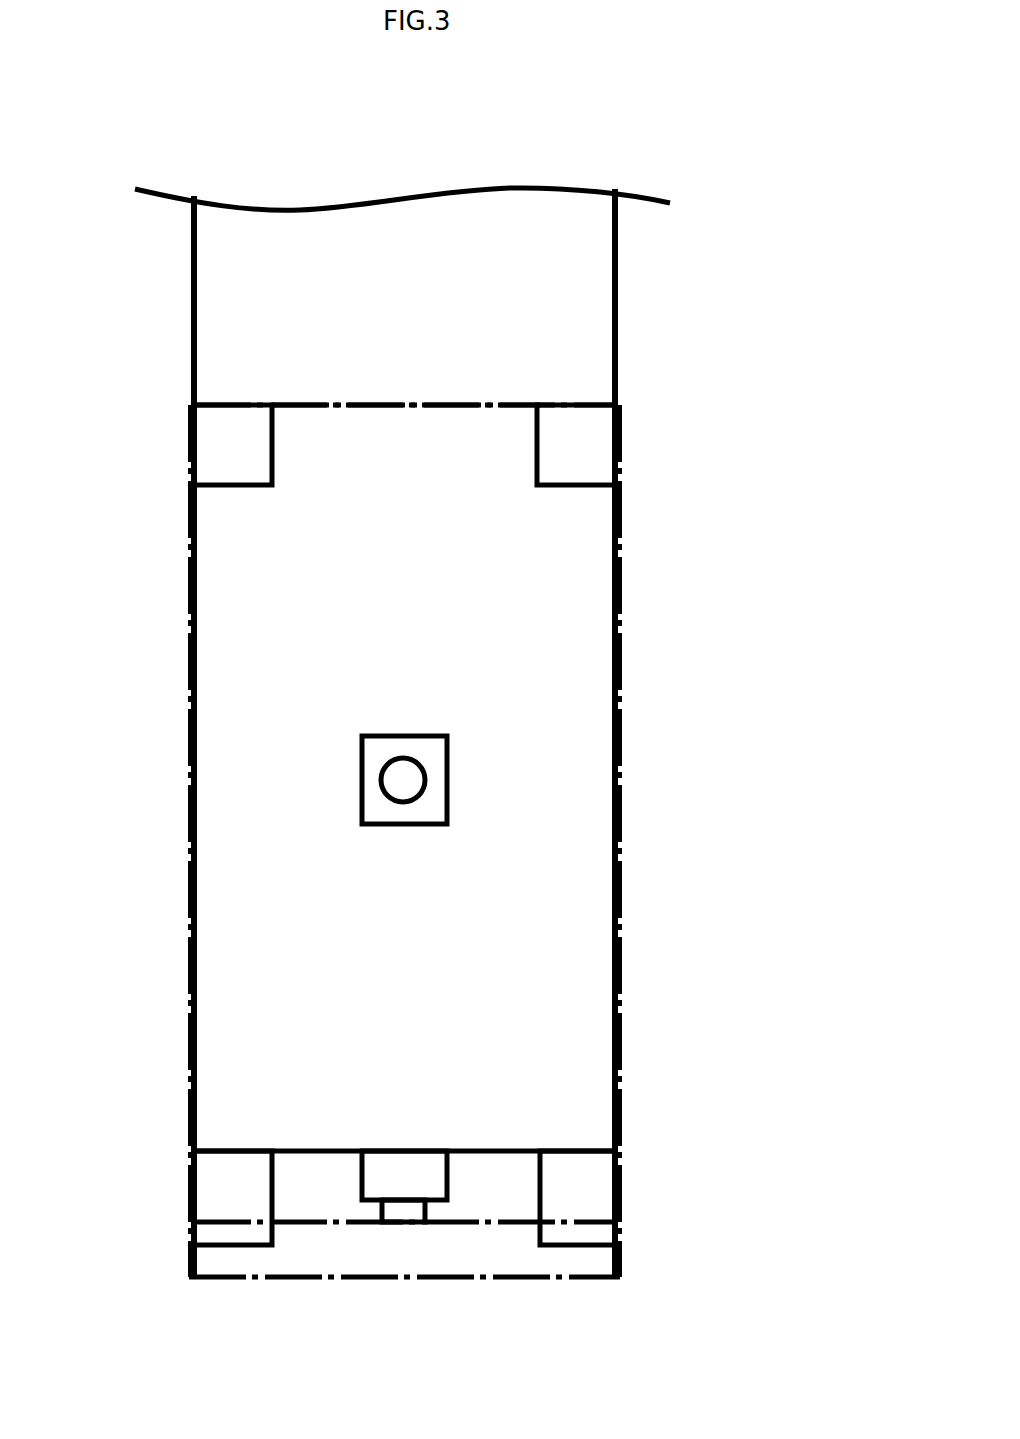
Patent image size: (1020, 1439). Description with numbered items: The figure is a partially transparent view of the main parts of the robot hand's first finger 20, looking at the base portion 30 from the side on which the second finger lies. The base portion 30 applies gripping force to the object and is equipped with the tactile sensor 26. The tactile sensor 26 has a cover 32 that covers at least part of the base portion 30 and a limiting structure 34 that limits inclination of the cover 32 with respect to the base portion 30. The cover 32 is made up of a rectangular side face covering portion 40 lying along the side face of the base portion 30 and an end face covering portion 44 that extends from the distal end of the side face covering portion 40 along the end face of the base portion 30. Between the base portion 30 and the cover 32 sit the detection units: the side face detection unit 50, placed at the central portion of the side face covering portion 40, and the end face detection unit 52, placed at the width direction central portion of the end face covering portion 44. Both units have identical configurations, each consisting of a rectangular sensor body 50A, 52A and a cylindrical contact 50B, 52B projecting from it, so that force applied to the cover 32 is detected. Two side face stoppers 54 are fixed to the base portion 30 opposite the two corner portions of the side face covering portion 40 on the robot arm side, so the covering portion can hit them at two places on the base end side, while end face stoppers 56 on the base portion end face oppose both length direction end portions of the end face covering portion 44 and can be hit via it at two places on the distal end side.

The first finger 20 is at (625, 138).
The tactile sensor 26 is at (708, 335).
The base portion 30 is at (593, 260).
The cover 32 is at (621, 517).
The limiting structure 34 is at (583, 390).
The side face covering portion 40 is at (590, 580).
The end face covering portion 44 is at (428, 1257).
The side face detection unit 50 is at (565, 779).
The sensor body 50A is at (447, 752).
The contact 50B is at (418, 780).
The end face detection unit 52 is at (564, 1126).
The sensor body 52A is at (420, 1165).
The contact 52B is at (418, 1213).
The side face stoppers 54 is at (208, 445).
The end face stoppers 56 is at (212, 1175).